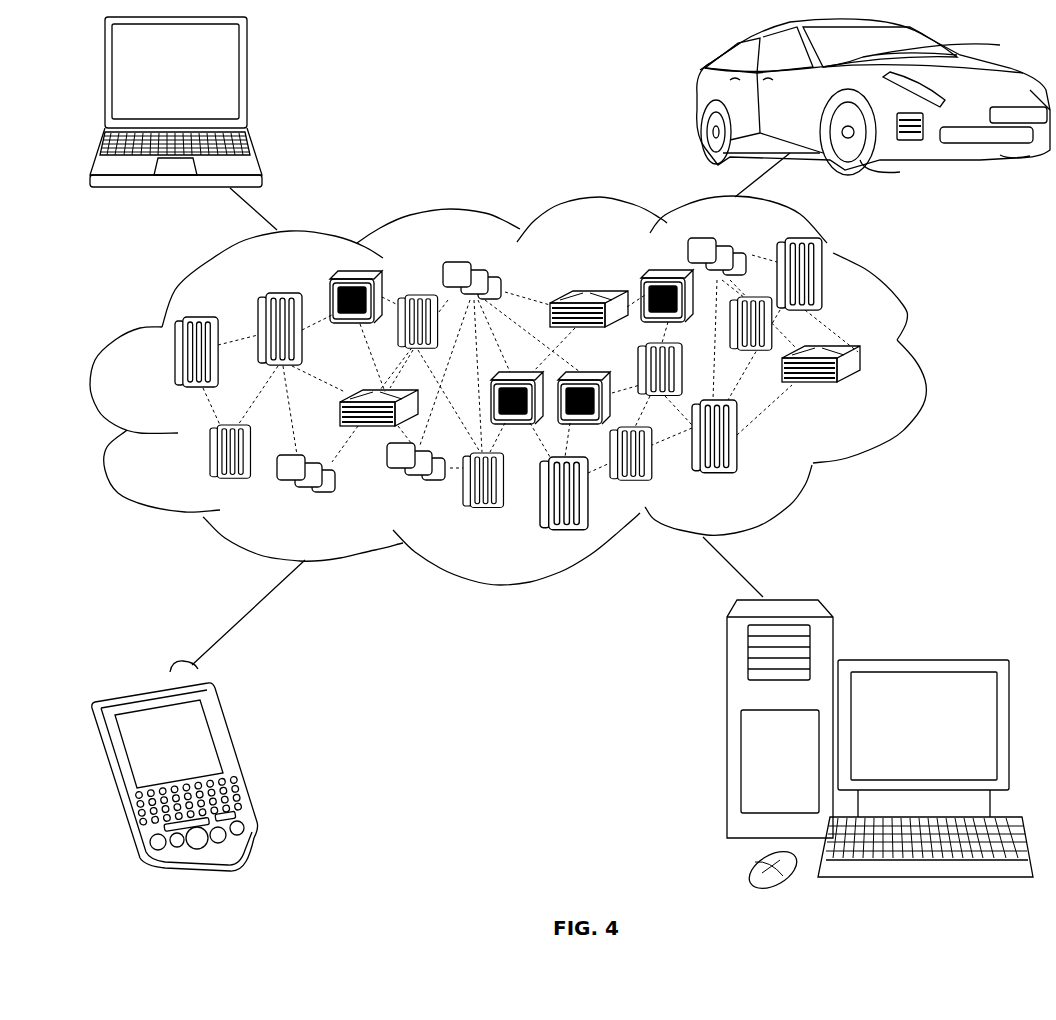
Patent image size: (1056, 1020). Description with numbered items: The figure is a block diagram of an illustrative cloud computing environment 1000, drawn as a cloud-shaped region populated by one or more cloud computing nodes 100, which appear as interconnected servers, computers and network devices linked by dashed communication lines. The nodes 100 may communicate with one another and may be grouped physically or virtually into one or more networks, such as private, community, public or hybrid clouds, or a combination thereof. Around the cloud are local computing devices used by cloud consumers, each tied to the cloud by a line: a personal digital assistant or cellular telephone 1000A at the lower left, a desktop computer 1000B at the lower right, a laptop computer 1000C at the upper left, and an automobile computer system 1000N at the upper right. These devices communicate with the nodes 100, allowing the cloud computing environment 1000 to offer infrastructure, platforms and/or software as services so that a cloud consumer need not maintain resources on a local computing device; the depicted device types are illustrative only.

The cloud computing environment 1000 is at (927, 362).
The cloud computing nodes 100 is at (868, 394).
The personal digital assistant or cellular telephone 1000A is at (237, 755).
The desktop computer 1000B is at (933, 640).
The laptop computer 1000C is at (248, 80).
The automobile computer system 1000N is at (692, 100).